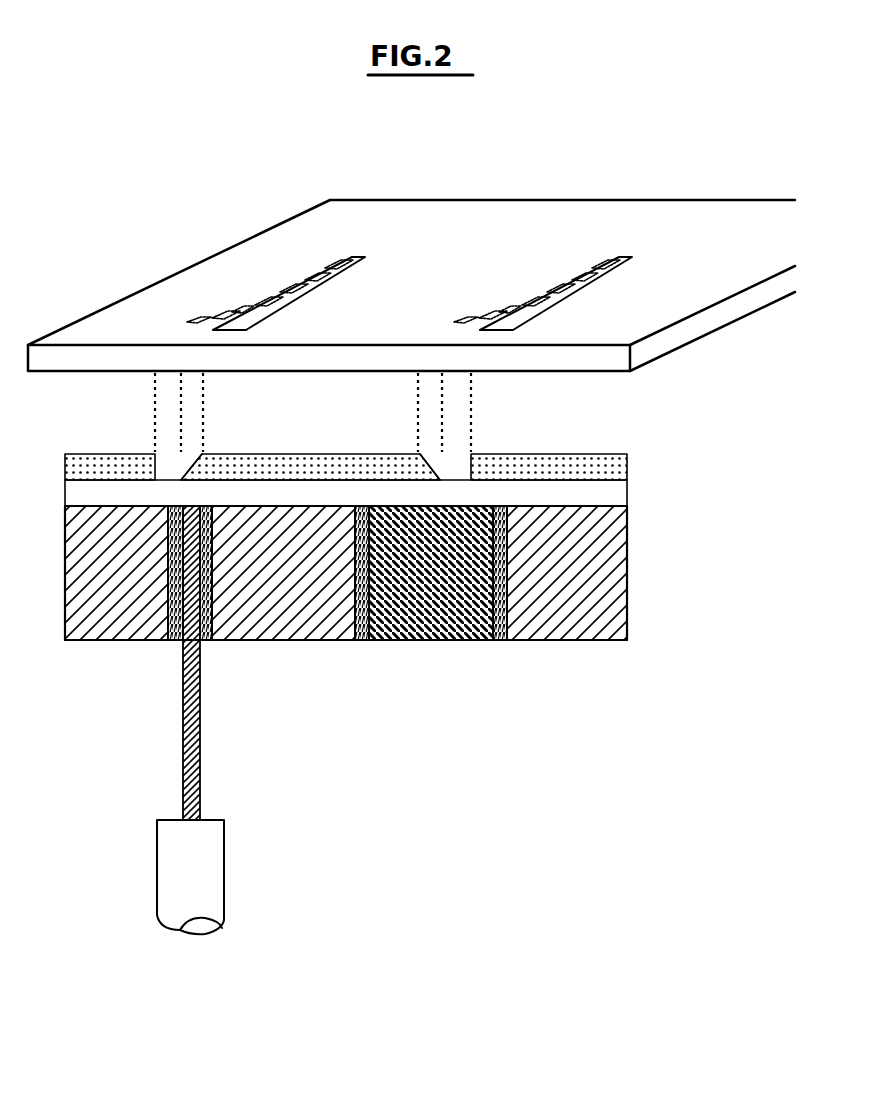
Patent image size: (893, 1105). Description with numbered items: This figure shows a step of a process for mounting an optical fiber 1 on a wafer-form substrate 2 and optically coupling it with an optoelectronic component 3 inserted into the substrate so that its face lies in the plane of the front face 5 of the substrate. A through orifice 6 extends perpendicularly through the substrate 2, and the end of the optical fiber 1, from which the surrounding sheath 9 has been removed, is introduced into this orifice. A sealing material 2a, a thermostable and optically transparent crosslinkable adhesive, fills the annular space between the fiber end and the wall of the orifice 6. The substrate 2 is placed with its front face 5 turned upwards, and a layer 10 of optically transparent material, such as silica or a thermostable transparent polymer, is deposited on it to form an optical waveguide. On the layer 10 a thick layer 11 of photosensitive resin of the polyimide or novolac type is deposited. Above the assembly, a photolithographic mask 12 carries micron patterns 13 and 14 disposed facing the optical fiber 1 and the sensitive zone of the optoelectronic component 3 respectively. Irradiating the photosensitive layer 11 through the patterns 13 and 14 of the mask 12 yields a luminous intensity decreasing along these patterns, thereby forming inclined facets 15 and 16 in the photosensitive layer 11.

The optical fiber 1 is at (195, 752).
The substrate 2 is at (595, 574).
The sealing material 2a is at (212, 594).
The optoelectronic component 3 is at (430, 600).
The front face of the substrate 5 is at (300, 506).
The through orifice 6 is at (168, 598).
The sheath 9 is at (203, 868).
The layer 10 is at (593, 495).
The thick layer of photosensitive resin 11 is at (607, 468).
The photolithographic mask 12 is at (718, 315).
The micron pattern 13 is at (228, 303).
The micron pattern 14 is at (490, 305).
The inclined facet 15 is at (195, 460).
The inclined facet 16 is at (425, 457).